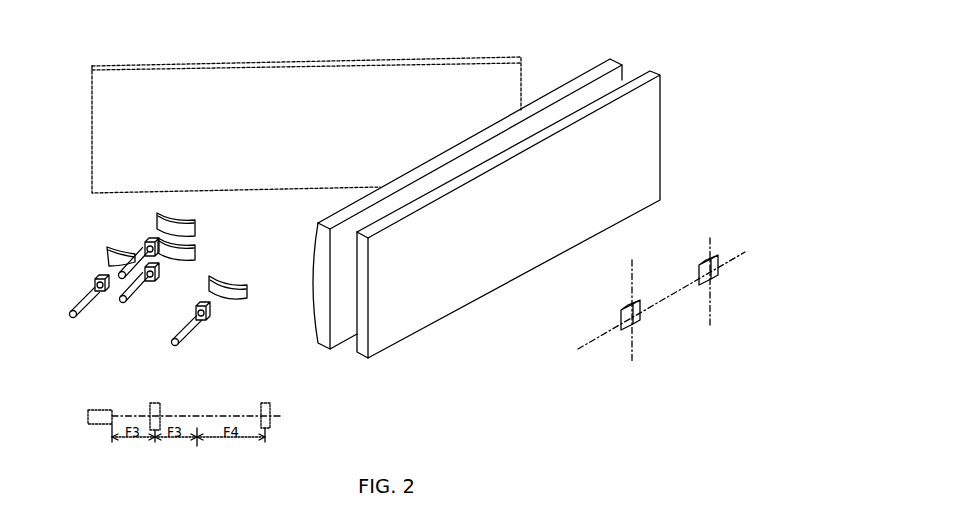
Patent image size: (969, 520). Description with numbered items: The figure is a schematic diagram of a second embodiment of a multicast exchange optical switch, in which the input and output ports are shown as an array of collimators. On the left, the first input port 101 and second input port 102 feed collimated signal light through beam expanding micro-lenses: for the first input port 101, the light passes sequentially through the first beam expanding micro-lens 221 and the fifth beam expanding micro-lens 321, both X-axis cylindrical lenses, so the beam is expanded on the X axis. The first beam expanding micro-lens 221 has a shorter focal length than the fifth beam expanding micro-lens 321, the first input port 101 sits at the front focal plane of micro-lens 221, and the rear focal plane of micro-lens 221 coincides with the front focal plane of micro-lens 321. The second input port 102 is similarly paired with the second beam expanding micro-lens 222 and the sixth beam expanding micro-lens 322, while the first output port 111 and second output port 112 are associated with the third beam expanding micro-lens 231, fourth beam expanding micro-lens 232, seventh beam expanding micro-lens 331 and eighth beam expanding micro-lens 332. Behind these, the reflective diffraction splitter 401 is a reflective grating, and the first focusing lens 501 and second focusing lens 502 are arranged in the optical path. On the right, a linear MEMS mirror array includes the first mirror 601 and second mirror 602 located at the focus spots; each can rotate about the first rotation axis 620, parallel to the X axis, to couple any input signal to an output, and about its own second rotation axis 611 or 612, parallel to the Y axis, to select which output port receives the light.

The reflective diffraction splitter 401 is at (278, 58).
The first focusing lens 501 is at (590, 63).
The second focusing lens 502 is at (652, 66).
The fifth beam expanding micro-lens 321 is at (205, 215).
The sixth beam expanding micro-lens 322 is at (203, 243).
The seventh beam expanding micro-lens 331 is at (217, 273).
The eighth beam expanding micro-lens 332 is at (127, 243).
The third beam expanding micro-lens 231 is at (212, 306).
The fourth beam expanding micro-lens 232 is at (93, 264).
The first beam expanding micro-lens 221 is at (167, 334).
The second beam expanding micro-lens 222 is at (164, 286).
The first input port 101 is at (118, 336).
The second input port 102 is at (128, 390).
The first output port 111 is at (181, 334).
The second output port 112 is at (80, 305).
The first mirror 601 is at (641, 318).
The second mirror 602 is at (719, 268).
The second rotation axis of mirror 601 611 is at (634, 347).
The second rotation axis of mirror 602 612 is at (712, 316).
The first rotation axis of mirror 620 is at (589, 338).